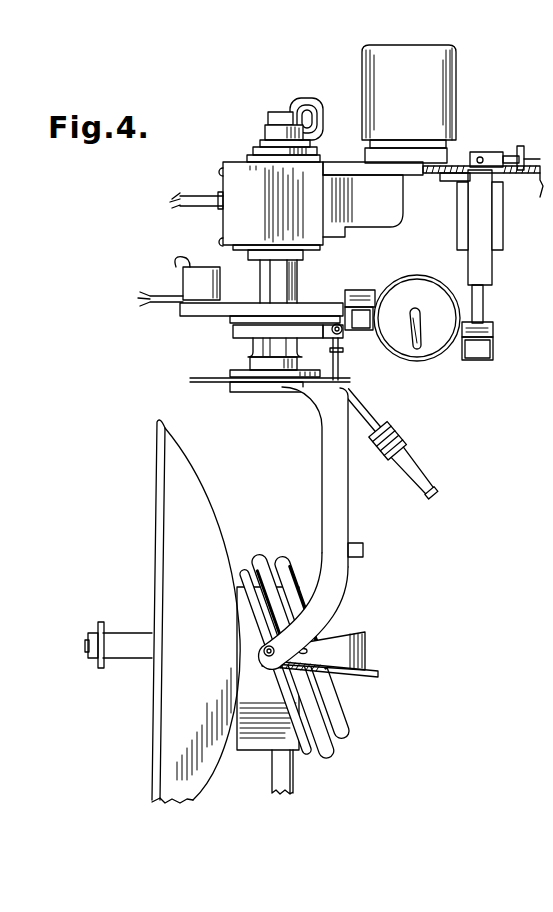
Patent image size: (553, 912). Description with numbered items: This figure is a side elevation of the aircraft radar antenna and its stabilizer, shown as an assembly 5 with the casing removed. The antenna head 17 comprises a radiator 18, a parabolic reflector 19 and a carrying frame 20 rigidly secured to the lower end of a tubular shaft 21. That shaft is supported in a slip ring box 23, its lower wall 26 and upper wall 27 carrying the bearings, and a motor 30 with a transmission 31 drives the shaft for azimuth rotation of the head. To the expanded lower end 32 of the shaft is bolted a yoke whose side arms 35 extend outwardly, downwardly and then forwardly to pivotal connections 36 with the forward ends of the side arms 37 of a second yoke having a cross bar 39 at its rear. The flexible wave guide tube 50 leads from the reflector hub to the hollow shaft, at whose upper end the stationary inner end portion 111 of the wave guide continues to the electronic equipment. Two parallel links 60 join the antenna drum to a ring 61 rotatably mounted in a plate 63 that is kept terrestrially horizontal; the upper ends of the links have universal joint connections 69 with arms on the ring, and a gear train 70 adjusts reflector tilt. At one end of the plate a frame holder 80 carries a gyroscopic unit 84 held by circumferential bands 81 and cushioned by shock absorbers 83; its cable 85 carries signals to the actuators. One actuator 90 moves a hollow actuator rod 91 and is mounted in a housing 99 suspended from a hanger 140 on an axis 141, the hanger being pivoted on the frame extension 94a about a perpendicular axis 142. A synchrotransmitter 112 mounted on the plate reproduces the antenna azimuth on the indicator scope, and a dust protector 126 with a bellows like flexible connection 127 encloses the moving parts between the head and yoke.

The apparatus 5 is at (84, 425).
The antenna head 17 is at (146, 505).
The radiator 18 is at (138, 660).
The parabolic reflector 19 is at (212, 505).
The carrying frame 20 is at (412, 605).
The tubular shaft 21 is at (297, 284).
The slip ring box 23 is at (243, 212).
The lower wall 26 is at (239, 249).
The upper wall 27 is at (233, 163).
The motor 30 is at (458, 80).
The transmission 31 is at (385, 212).
The expanded lower end 32 is at (267, 368).
The side arms 35 is at (349, 518).
The pivotal connections 36 is at (266, 660).
The side arms 37 is at (333, 644).
The cross bar 39 is at (373, 656).
The wave guide tube 50 is at (434, 485).
The links 60 is at (340, 612).
The ring 61 is at (247, 340).
The plate 63 is at (217, 317).
The universal joint connections 69 is at (343, 339).
The gear train 70 is at (328, 340).
The frame holder 80 is at (375, 290).
The circumferential bands 81 is at (422, 358).
The shock absorbers 83 is at (352, 307).
The gyroscopic unit 84 is at (431, 348).
The cable 85 is at (421, 323).
The actuator 90 is at (508, 263).
The actuator rod 91 is at (486, 318).
The extension 94a is at (457, 172).
The housing 99 is at (503, 239).
The inner end portion of the wave guide 111 is at (283, 113).
The synchrotransmitter 112 is at (177, 304).
The dust protector 126 is at (354, 728).
The bellows like flexible connection 127 is at (333, 765).
The hanger 140 is at (496, 152).
The axis 141 is at (460, 168).
The axis 142 is at (525, 157).